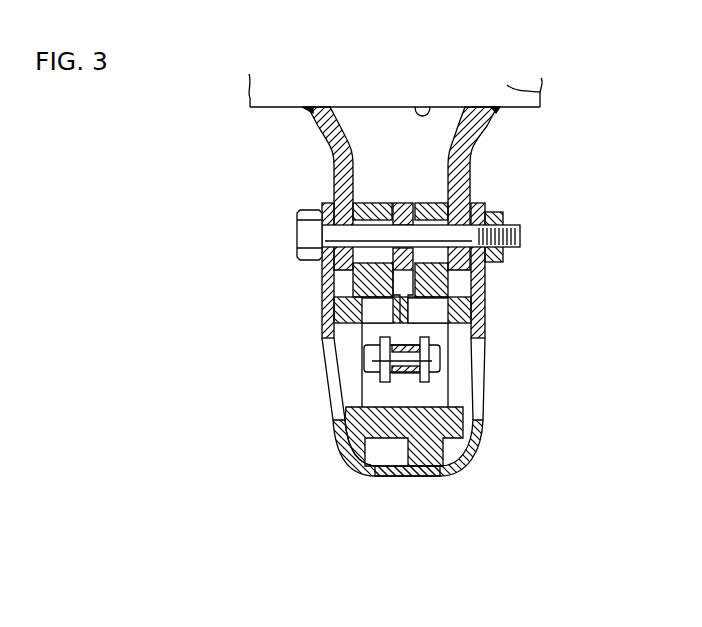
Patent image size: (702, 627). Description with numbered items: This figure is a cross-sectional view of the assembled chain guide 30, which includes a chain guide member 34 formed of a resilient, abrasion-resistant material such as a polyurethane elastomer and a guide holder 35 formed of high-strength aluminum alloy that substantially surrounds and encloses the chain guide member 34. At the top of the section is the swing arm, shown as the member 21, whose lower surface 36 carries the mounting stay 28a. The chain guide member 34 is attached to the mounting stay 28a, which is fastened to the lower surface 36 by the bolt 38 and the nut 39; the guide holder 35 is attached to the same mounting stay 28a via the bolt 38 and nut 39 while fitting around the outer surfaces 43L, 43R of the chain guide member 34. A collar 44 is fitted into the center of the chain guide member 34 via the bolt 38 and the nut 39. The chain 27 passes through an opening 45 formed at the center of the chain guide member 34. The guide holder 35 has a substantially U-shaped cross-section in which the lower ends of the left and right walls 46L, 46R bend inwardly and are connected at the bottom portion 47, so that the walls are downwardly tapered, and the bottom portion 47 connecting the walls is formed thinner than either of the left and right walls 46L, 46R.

The vehicle body frame member 21 is at (543, 90).
The lower surface of the swing arm 36 is at (430, 107).
The mounting stay 28a is at (318, 128).
The chain guide member 34 is at (433, 204).
The collar 44 is at (401, 204).
The bolt 38 is at (305, 234).
The nut 39 is at (503, 262).
The outer surface of the chain guide member 43L is at (322, 306).
The outer surface of the chain guide member 43R is at (487, 310).
The chain 27 is at (376, 358).
The opening 45 is at (380, 390).
The left wall 46L is at (326, 427).
The right wall 46R is at (490, 422).
The guide holder 35 is at (478, 468).
The bottom portion 47 is at (400, 473).
The chain guide 30 is at (338, 496).